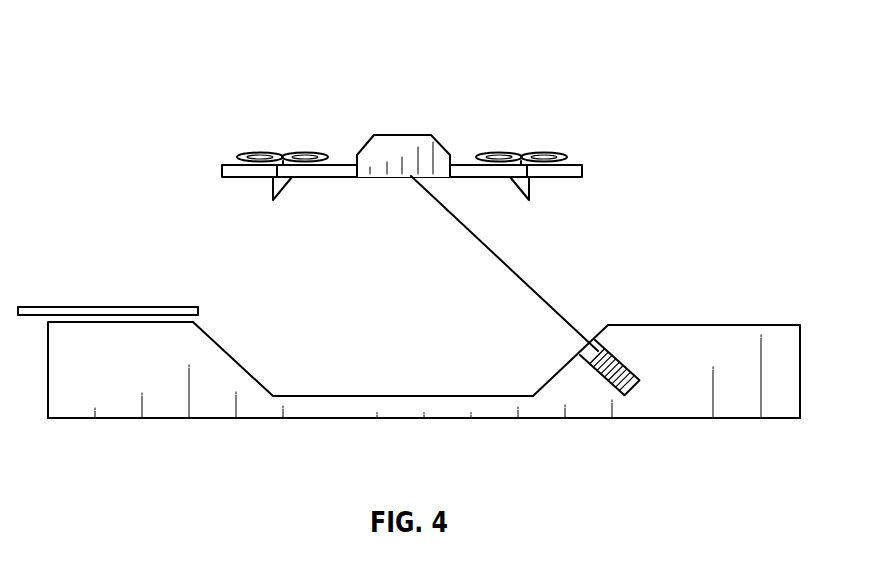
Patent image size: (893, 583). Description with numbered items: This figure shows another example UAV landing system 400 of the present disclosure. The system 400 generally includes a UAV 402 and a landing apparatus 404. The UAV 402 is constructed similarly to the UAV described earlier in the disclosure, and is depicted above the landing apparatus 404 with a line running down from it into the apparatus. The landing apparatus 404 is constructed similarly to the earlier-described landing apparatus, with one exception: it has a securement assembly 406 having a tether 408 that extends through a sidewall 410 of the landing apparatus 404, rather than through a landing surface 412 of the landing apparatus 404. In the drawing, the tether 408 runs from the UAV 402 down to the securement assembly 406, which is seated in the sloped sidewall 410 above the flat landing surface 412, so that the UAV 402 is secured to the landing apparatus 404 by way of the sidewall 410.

The system 400 is at (160, 36).
The UAV 402 is at (467, 116).
The landing apparatus 404 is at (675, 306).
The securement assembly 406 is at (631, 390).
The tether 408 is at (504, 263).
The sidewall 410 is at (563, 366).
The landing surface 412 is at (357, 413).